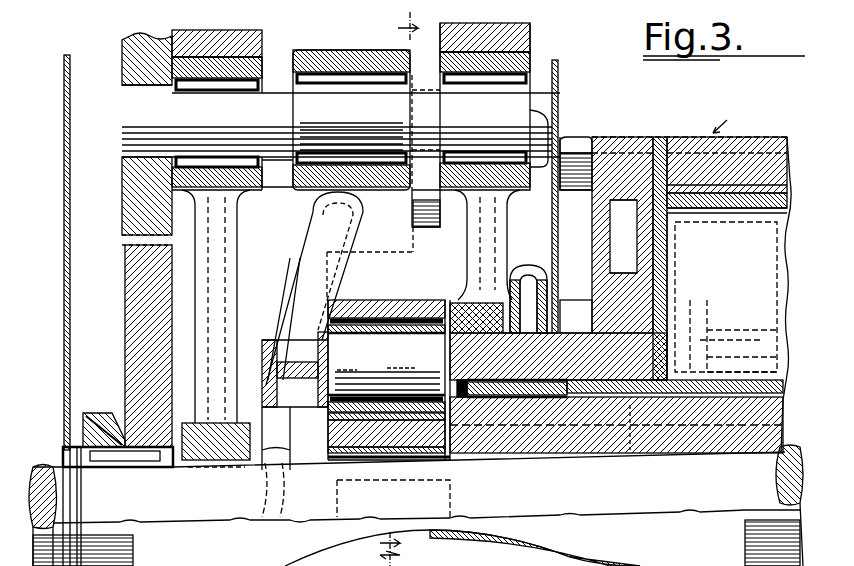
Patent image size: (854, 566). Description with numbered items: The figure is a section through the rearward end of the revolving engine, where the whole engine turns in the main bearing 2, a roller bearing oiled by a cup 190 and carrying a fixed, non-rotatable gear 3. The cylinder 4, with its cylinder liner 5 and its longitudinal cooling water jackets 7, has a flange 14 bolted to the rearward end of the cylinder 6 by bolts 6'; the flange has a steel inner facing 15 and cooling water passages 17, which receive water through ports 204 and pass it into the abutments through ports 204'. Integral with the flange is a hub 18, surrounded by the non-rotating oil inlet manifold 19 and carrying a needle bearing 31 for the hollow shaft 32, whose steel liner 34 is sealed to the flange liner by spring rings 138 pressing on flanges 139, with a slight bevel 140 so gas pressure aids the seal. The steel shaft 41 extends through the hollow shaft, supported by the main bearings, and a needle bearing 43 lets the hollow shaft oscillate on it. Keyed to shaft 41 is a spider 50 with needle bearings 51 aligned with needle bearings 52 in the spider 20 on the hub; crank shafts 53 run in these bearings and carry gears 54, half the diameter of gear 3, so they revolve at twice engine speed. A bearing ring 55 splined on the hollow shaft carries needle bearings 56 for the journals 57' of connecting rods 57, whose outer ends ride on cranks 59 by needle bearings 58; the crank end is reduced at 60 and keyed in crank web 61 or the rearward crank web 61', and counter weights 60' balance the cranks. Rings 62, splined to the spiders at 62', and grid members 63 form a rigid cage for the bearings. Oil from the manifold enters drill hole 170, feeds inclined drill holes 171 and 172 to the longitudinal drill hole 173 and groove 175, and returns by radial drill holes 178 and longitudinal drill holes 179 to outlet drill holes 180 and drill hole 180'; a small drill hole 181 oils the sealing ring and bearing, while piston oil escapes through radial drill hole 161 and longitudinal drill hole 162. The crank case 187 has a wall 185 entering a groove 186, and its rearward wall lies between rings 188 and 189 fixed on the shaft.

The main bearing 2 is at (131, 464).
The non-rotatable gear 3 is at (143, 335).
The cylinder 4 is at (556, 285).
The cylinder liner 5 is at (787, 200).
The cylinder 6 is at (689, 153).
The bolts 6' is at (576, 152).
The cooling water jackets 7 is at (757, 141).
The flange 14 is at (610, 226).
The steel inner facing 15 is at (660, 137).
The cooling water passages 17 is at (617, 247).
The hub 18 is at (453, 369).
The oil inlet manifold 19 is at (530, 267).
The spider 20 is at (473, 243).
The needle bearing 31 is at (510, 400).
The hollow shaft 32 is at (774, 400).
The outer facing or liner 34 is at (782, 376).
The steel shaft 41 is at (183, 513).
The needle bearing 43 is at (372, 458).
The spider 50 is at (222, 300).
The needle bearings 51 is at (218, 85).
The needle bearings 52 is at (524, 108).
The crank shafts 53 is at (138, 128).
The gears 54 is at (126, 193).
The bearing ring 55 is at (390, 301).
The needle bearings 56 is at (386, 328).
The connecting rods 57 is at (284, 308).
The journals 57' is at (377, 440).
The needle bearings 58 is at (312, 198).
The cranks 59 is at (323, 90).
The reduced diameter end of crank 60 is at (426, 189).
The counter weights 60' is at (383, 250).
The crank web 61 is at (426, 119).
The rearward crank web 61' is at (275, 179).
The rings 62 is at (369, 32).
The splines 62' is at (371, 44).
The grid members 63 is at (620, 563).
The spring rings 138 is at (648, 427).
The flanges 139 is at (587, 445).
The bevel 140 is at (622, 335).
The radial drill hole 161 is at (710, 412).
The longitudinal drill hole 162 is at (587, 432).
The drill hole 170 is at (576, 316).
The inclined drill hole 171 is at (620, 325).
The inclined drill hole 172 is at (707, 330).
The longitudinal drill hole 173 is at (740, 342).
The groove 175 is at (750, 370).
The radial drill holes 178 is at (710, 332).
The longitudinal drill holes 179 is at (692, 304).
The outlet drill holes 180 is at (394, 398).
The drill hole 180' is at (389, 364).
The small drill hole 181 is at (577, 355).
The crank case wall 185 is at (558, 76).
The groove 186 is at (535, 342).
The crank case 187 is at (70, 274).
The ring 188 is at (66, 447).
The ring 189 is at (83, 517).
The oil cup 190 is at (107, 413).
The ports 204 is at (622, 223).
The ports 204' is at (694, 306).